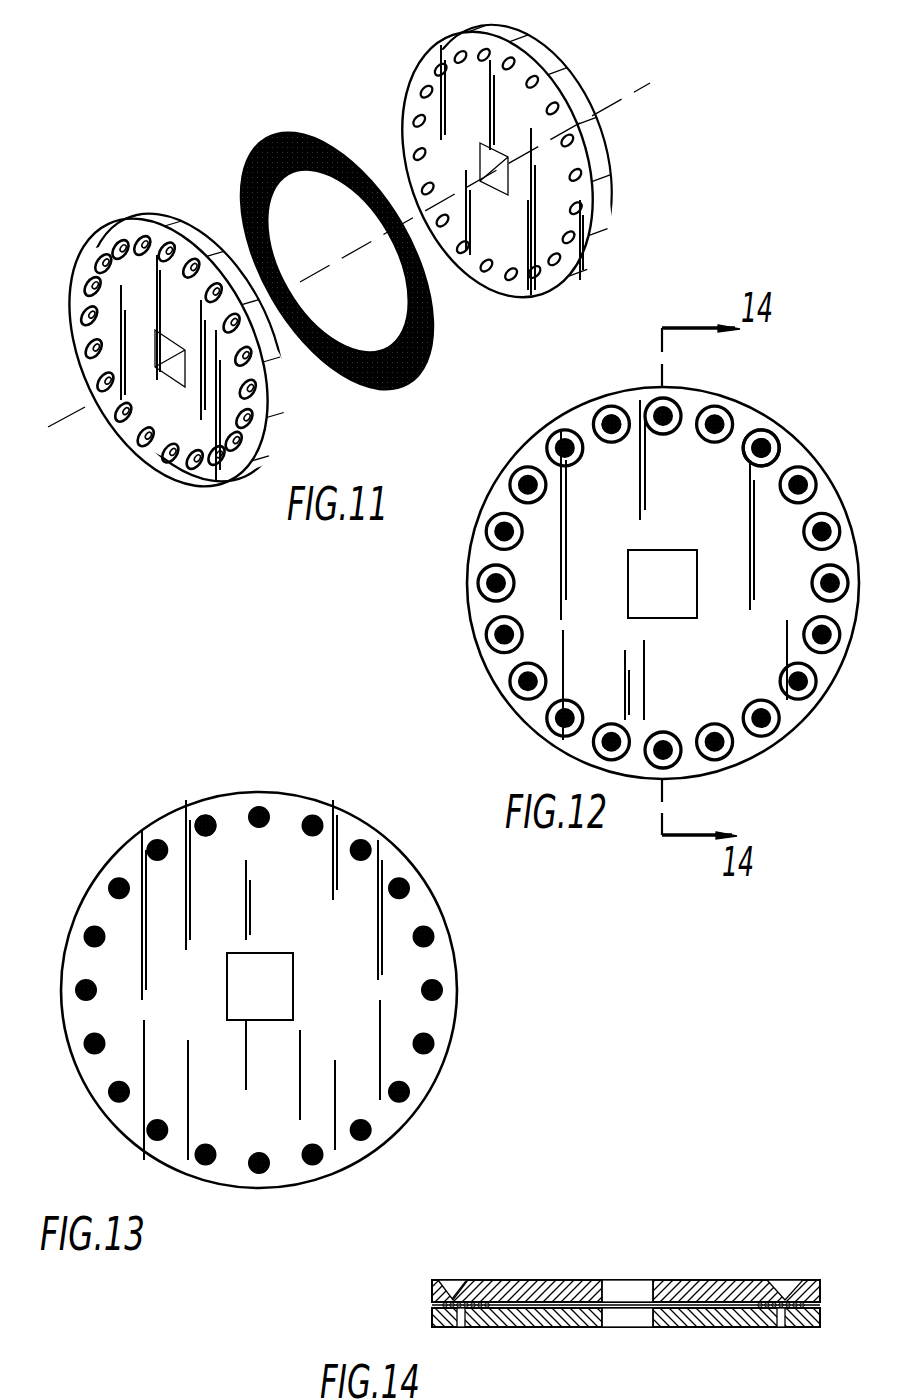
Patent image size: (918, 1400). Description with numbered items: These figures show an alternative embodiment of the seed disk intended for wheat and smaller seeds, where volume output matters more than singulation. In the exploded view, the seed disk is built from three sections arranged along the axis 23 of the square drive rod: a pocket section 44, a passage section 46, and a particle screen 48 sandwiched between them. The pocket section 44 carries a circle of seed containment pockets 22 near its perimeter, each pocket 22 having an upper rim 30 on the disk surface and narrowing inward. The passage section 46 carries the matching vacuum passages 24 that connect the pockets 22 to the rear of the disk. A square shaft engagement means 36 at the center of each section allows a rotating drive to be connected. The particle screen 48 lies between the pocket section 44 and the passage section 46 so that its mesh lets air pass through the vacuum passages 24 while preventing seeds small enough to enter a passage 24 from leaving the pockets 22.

In FIG. 11, the seed containment pocket 22 is at (253, 440).
In FIG. 12, the seed containment pocket 22 is at (771, 433).
In FIG. 14, the seed containment pocket 22 is at (452, 1285).
In FIG. 11, the axis 23 is at (83, 407).
In FIG. 11, the vacuum passage 24 is at (570, 262).
In FIG. 12, the vacuum passage 24 is at (763, 433).
In FIG. 13, the vacuum passage 24 is at (363, 842).
In FIG. 14, the vacuum passage 24 is at (462, 1328).
In FIG. 12, the upper rim 30 is at (772, 453).
In FIG. 14, the upper rim 30 is at (480, 1280).
In FIG. 11, the shaft engagement means 36 is at (153, 358).
In FIG. 12, the shaft engagement means 36 is at (676, 612).
In FIG. 13, the shaft engagement means 36 is at (276, 1018).
In FIG. 14, the shaft engagement means 36 is at (630, 1282).
In FIG. 11, the pocket section 44 is at (177, 348).
In FIG. 12, the pocket section 44 is at (668, 560).
In FIG. 14, the pocket section 44 is at (609, 1261).
In FIG. 11, the passage section 46 is at (507, 161).
In FIG. 13, the passage section 46 is at (259, 979).
In FIG. 14, the passage section 46 is at (626, 1342).
In FIG. 11, the particle screen 48 is at (258, 147).
In FIG. 12, the particle screen 48 is at (601, 414).
In FIG. 13, the particle screen 48 is at (202, 821).
In FIG. 14, the particle screen 48 is at (777, 1328).